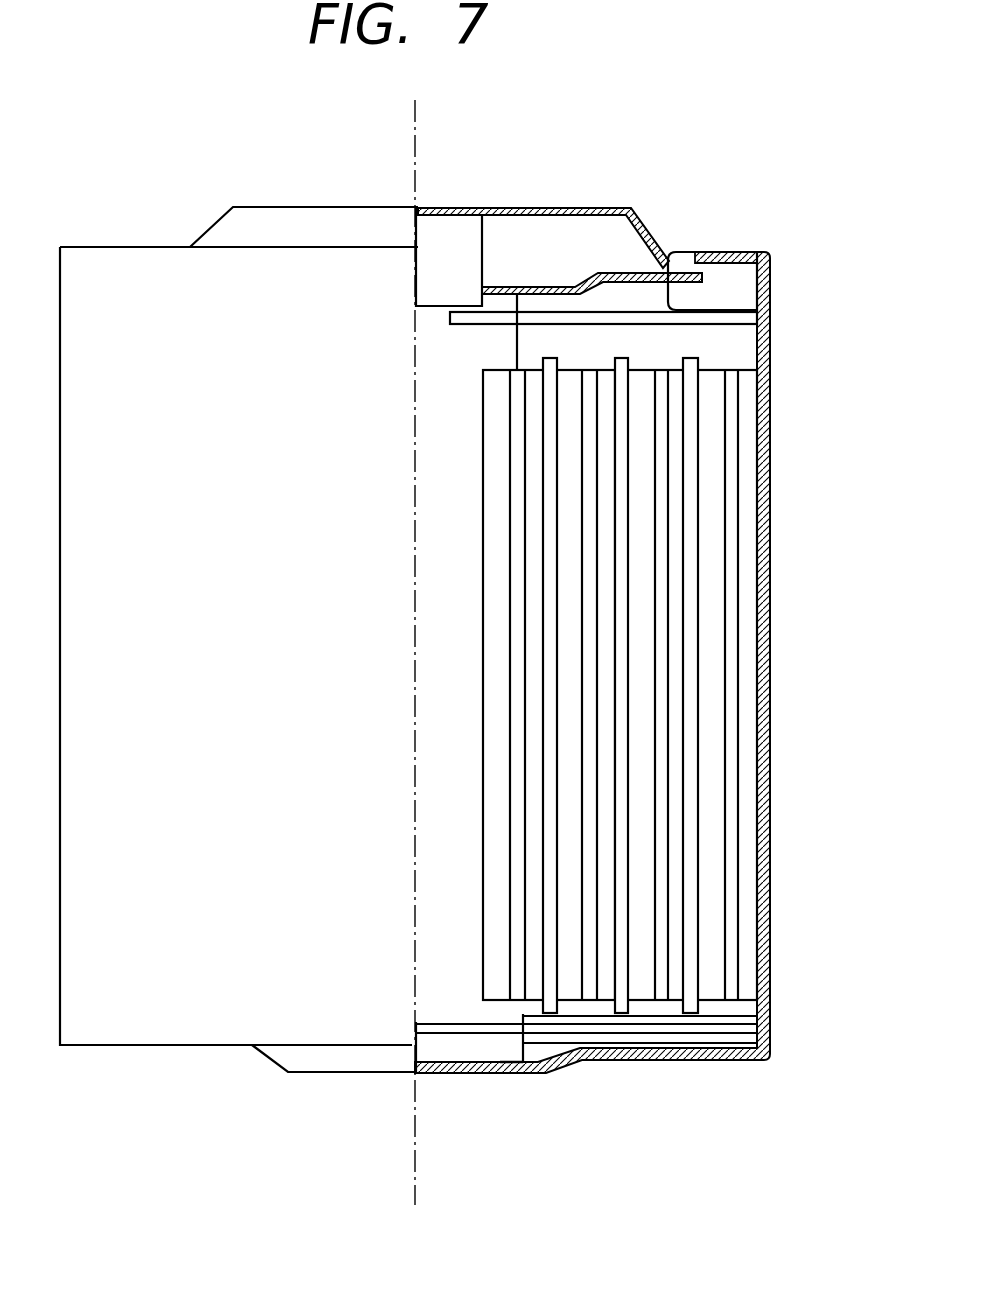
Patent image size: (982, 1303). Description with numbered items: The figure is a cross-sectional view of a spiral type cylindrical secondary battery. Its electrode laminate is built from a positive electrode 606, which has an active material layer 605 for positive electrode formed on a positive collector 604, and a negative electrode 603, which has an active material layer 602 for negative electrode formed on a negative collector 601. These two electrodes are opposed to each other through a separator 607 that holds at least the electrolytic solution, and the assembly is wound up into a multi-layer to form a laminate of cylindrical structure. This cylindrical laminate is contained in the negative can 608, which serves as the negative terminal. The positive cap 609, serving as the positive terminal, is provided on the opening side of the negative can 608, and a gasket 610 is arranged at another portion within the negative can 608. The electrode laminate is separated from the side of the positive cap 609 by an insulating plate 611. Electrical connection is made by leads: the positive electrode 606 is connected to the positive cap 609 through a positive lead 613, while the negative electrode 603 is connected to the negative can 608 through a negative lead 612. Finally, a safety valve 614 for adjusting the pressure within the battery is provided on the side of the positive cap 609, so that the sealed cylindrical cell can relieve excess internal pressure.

The negative collector 601 is at (732, 793).
The active material layer for negative electrode 602 is at (605, 697).
The negative electrode 603 is at (608, 368).
The positive collector 604 is at (658, 872).
The active material layer for positive electrode 605 is at (677, 488).
The positive electrode 606 is at (683, 368).
The separator 607 is at (692, 563).
The negative can 608 is at (432, 1075).
The positive cap 609 is at (562, 210).
The gasket 610 is at (745, 267).
The insulating plate 611 is at (748, 318).
The negative lead 612 is at (537, 1075).
The positive lead 613 is at (517, 342).
The safety valve 614 is at (438, 228).